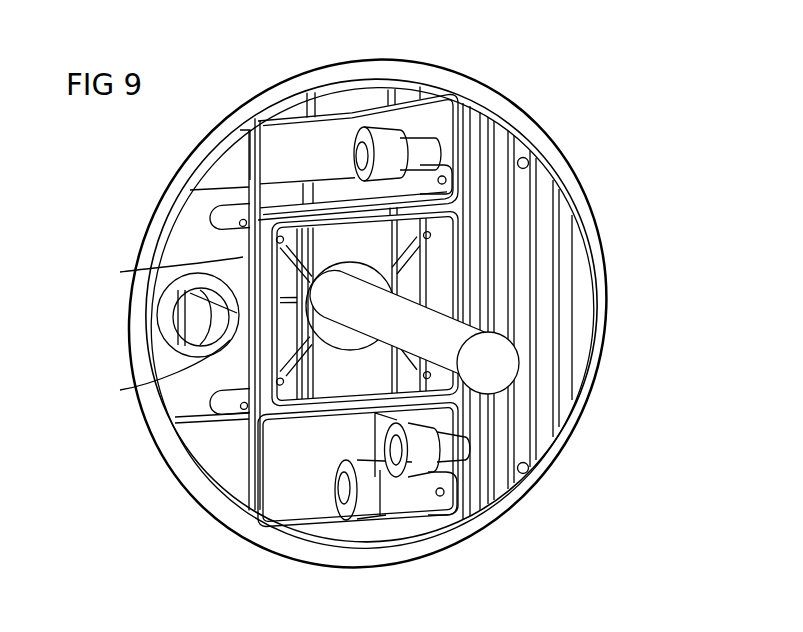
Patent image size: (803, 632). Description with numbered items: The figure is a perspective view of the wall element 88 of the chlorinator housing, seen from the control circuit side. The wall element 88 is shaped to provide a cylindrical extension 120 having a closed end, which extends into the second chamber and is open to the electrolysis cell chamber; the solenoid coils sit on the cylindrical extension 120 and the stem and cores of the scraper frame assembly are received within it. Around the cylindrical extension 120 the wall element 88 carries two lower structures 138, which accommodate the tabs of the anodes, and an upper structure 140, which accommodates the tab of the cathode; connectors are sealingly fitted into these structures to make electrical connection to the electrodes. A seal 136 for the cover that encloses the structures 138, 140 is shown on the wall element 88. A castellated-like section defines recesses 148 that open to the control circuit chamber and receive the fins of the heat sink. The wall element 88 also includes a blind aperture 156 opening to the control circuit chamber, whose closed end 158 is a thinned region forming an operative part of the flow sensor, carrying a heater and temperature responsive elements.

The wall element 88 is at (578, 114).
The cylindrical extension 120 is at (403, 315).
The seal 136 is at (253, 268).
The lower structures 138 is at (372, 512).
The upper structure 140 is at (378, 124).
The recesses 148 is at (533, 282).
The blind aperture 156 is at (207, 337).
The closed end 158 is at (192, 278).